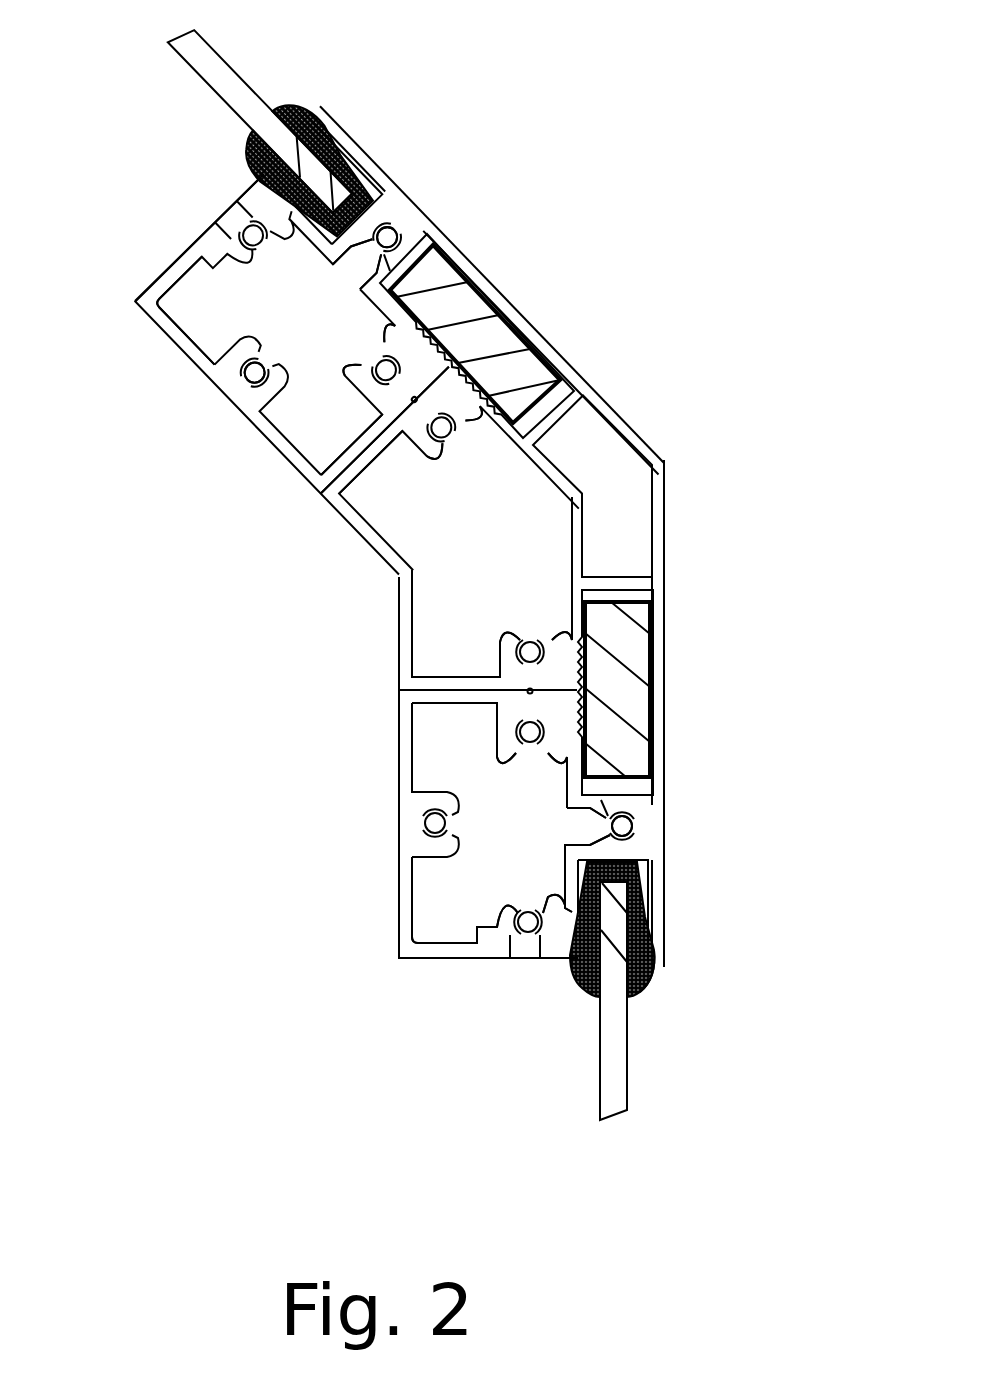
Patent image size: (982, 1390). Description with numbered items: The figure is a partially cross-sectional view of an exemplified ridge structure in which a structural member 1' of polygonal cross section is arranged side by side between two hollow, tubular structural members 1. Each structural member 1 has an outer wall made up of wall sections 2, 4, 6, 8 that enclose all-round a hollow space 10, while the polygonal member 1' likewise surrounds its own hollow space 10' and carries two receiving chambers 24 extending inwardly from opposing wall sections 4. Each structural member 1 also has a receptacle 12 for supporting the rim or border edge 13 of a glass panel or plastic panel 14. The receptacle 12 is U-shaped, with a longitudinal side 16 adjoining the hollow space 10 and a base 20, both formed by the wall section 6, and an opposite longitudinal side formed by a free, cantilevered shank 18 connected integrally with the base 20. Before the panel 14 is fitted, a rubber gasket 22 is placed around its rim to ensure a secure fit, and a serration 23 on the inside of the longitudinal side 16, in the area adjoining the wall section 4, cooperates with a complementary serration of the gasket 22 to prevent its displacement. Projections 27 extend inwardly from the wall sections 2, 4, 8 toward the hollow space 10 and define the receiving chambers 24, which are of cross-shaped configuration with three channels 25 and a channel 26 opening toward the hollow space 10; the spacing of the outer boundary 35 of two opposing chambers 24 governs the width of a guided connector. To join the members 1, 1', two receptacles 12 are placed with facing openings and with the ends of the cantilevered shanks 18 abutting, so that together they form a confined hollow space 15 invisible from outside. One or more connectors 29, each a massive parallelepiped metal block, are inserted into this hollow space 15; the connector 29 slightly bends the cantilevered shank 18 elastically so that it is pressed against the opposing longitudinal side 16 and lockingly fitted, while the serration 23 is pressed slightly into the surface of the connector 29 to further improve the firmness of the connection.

The structural member 1 is at (279, 748).
The structural member of polygonal cross section 1' is at (523, 284).
The wall section 2 is at (403, 733).
The wall section 4 is at (473, 682).
The wall section 6 is at (652, 815).
The wall section 8 is at (423, 953).
The hollow space 10 is at (333, 600).
The corner hollow chamber 10' is at (647, 487).
The receptacle 12 is at (653, 627).
The rim or border edge 13 is at (615, 907).
The glass panel or plastic panel 14 is at (613, 1063).
The confined hollow space 15 is at (565, 395).
The longitudinal side 16 is at (567, 880).
The cantilevered shank 18 is at (660, 660).
The base 20 is at (622, 853).
The rubber gasket 22 is at (653, 983).
The serration 23 is at (567, 930).
The receiving chamber 24 is at (532, 647).
The channel 25 is at (535, 710).
The channel 26 is at (528, 762).
The projection 27 is at (520, 640).
The connector 29 is at (520, 511).
The outer boundary 35 is at (245, 385).